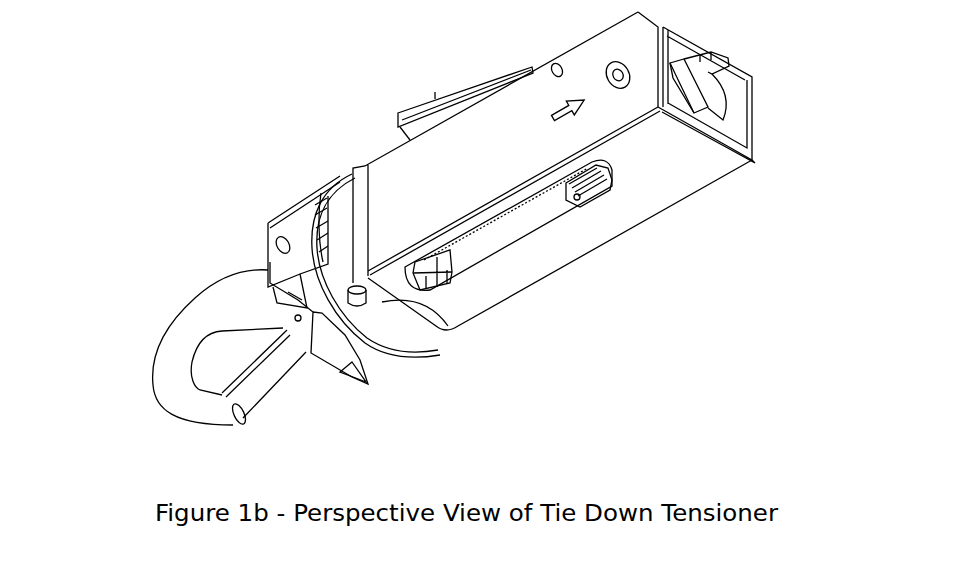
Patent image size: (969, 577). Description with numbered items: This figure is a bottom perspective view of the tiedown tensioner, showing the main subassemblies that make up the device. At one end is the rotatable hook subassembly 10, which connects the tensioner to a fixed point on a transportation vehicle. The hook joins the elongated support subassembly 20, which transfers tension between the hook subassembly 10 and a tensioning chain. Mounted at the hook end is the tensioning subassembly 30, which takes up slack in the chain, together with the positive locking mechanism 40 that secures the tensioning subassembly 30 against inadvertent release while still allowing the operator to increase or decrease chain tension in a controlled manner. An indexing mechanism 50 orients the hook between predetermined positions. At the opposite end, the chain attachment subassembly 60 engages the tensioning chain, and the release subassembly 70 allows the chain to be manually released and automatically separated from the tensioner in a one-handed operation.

The rotatable hook subassembly 10 is at (171, 310).
The support subassembly 20 is at (380, 158).
The tensioning subassembly 30 is at (255, 246).
The positive locking mechanism 40 is at (370, 302).
The indexing mechanism 50 is at (600, 196).
The chain attachment subassembly 60 is at (718, 72).
The release subassembly 70 is at (404, 106).